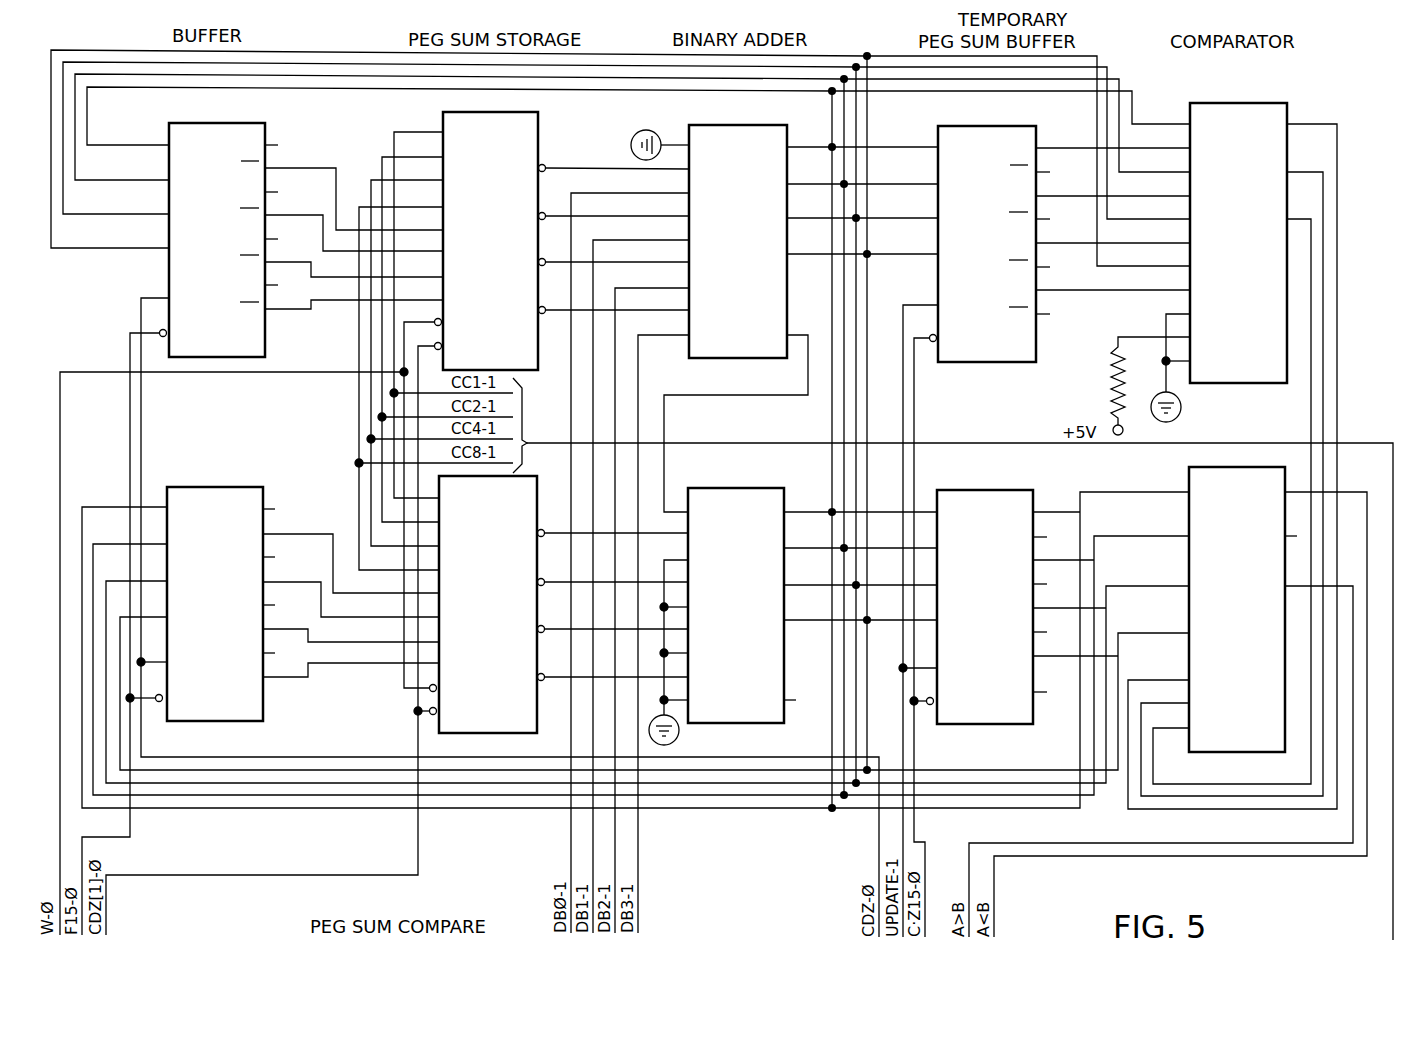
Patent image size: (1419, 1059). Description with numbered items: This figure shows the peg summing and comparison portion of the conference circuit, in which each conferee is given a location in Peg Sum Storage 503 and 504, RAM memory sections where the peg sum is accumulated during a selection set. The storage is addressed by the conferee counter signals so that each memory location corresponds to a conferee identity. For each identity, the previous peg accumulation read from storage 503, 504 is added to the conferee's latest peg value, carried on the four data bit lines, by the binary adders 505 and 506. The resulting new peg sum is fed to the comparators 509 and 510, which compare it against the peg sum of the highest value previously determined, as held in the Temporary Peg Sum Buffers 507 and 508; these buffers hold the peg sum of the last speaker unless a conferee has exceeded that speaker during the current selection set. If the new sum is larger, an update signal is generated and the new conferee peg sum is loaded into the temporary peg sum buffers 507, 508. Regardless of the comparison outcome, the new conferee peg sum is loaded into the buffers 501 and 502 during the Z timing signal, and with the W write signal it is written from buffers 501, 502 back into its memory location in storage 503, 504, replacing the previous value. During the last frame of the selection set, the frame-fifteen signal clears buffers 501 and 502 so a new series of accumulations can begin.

The buffer 501 is at (247, 123).
The buffer 502 is at (237, 722).
The peg sum storage 503 is at (525, 113).
The peg sum storage 504 is at (505, 734).
The binary adder 505 is at (748, 125).
The binary adder 506 is at (755, 724).
The temporary peg sum buffer 507 is at (995, 126).
The temporary peg sum buffer 508 is at (1000, 725).
The comparator 509 is at (1255, 103).
The comparator 510 is at (1238, 753).